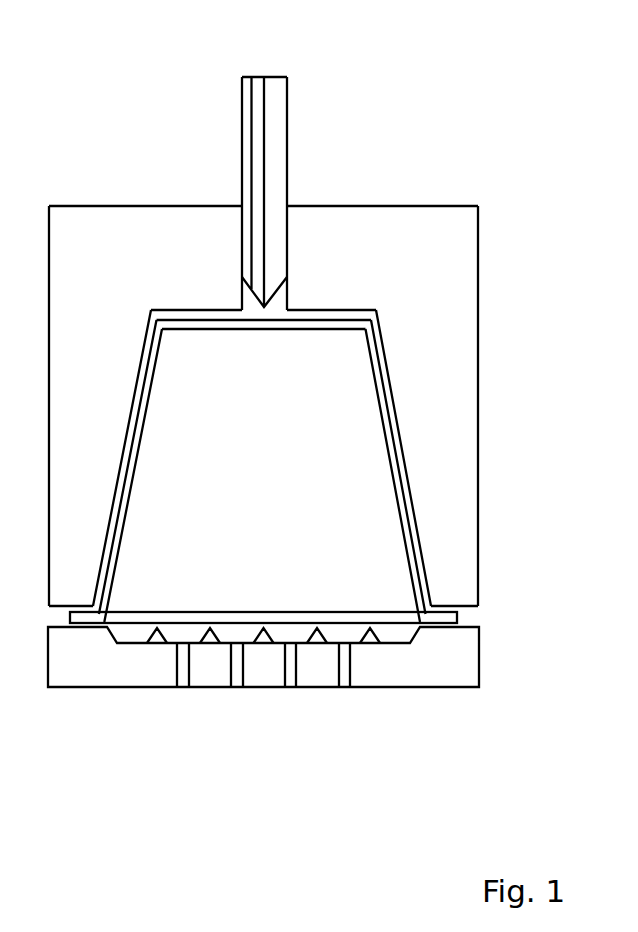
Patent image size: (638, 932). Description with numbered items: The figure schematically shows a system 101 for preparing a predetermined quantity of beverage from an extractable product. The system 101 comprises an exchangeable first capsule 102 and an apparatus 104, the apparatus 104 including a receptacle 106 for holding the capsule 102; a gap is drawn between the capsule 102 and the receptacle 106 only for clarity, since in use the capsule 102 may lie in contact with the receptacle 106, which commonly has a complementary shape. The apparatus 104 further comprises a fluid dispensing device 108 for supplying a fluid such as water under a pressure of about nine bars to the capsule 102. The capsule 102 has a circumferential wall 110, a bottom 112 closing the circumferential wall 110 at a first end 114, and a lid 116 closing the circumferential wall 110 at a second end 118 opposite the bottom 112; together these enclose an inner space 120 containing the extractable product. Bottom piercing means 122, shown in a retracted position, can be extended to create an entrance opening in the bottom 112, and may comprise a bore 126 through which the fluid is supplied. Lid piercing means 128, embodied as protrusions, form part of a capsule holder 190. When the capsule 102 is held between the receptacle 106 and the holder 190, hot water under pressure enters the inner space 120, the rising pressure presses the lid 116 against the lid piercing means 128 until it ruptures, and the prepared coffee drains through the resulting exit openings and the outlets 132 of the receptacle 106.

The system 101 is at (510, 695).
The exchangeable first capsule 102 is at (410, 487).
The apparatus 104 is at (497, 224).
The receptacle 106 is at (478, 377).
The fluid dispensing device 108 is at (287, 86).
The circumferential wall 110 is at (412, 543).
The bottom 112 is at (342, 325).
The first end 114 is at (372, 332).
The lid 116 is at (392, 623).
The second end 118 is at (437, 603).
The inner space 120 is at (210, 426).
The bottom piercing means 122 is at (287, 188).
The bore 126 is at (255, 77).
The lid piercing means 128 is at (158, 640).
The outlets 132 is at (183, 682).
The capsule holder 190 is at (78, 659).